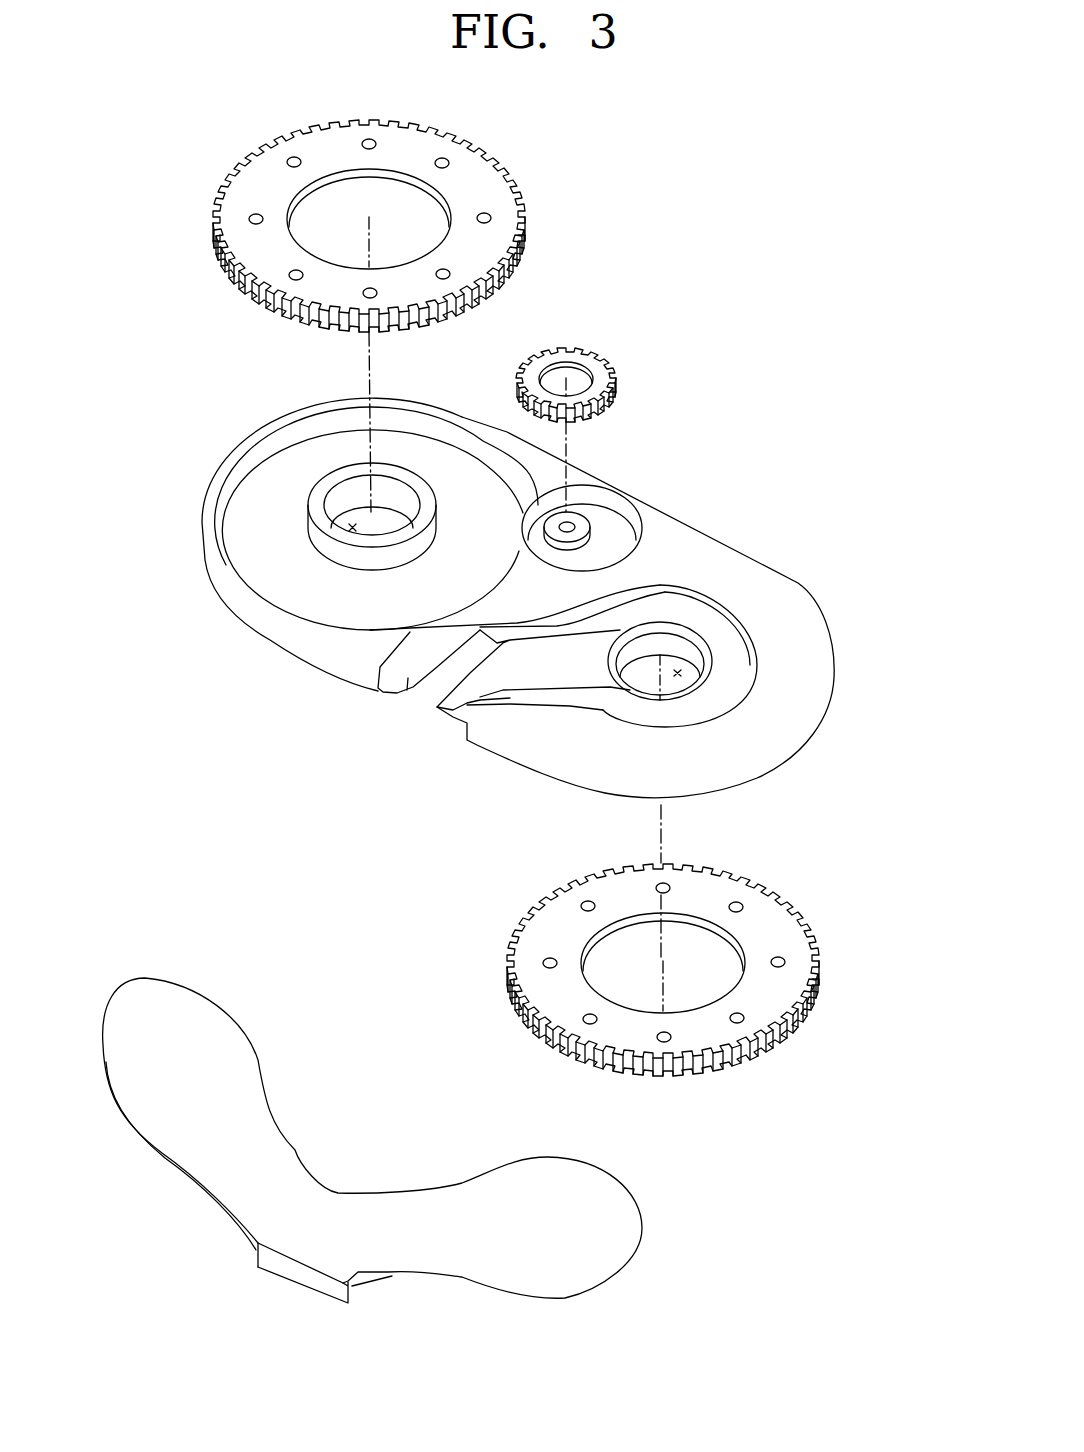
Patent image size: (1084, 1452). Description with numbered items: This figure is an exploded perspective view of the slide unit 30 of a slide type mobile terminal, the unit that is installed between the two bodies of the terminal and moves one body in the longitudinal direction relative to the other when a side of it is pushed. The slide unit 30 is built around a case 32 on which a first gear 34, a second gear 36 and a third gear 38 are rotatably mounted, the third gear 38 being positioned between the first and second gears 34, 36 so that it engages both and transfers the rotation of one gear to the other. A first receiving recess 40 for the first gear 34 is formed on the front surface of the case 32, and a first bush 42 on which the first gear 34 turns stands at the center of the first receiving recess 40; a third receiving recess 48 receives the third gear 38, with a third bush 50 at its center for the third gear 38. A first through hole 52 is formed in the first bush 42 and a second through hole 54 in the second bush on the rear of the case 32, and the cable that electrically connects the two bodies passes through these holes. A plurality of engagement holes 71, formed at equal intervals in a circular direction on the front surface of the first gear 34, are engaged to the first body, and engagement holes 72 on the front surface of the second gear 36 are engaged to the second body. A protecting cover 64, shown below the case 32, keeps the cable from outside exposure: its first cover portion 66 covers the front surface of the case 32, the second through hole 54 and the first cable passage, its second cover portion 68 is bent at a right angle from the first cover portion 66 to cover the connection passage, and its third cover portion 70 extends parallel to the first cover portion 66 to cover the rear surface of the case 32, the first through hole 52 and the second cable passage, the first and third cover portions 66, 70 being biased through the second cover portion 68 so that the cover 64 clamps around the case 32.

The slide unit 30 is at (858, 259).
The case 32 is at (492, 579).
The first gear 34 is at (379, 213).
The second gear 36 is at (699, 970).
The third gear 38 is at (582, 363).
The first receiving recess 40 is at (271, 486).
The first bush 42 is at (325, 488).
The third receiving recess 48 is at (610, 538).
The third bush 50 is at (584, 516).
The first through hole 52 is at (350, 526).
The second through hole 54 is at (678, 672).
The protecting cover 64 is at (439, 1113).
The first cover portion 66 is at (575, 1210).
The second cover portion 68 is at (288, 1266).
The third cover portion 70 is at (198, 1008).
The engagement holes 71 is at (290, 158).
The engagement holes 72 is at (786, 959).